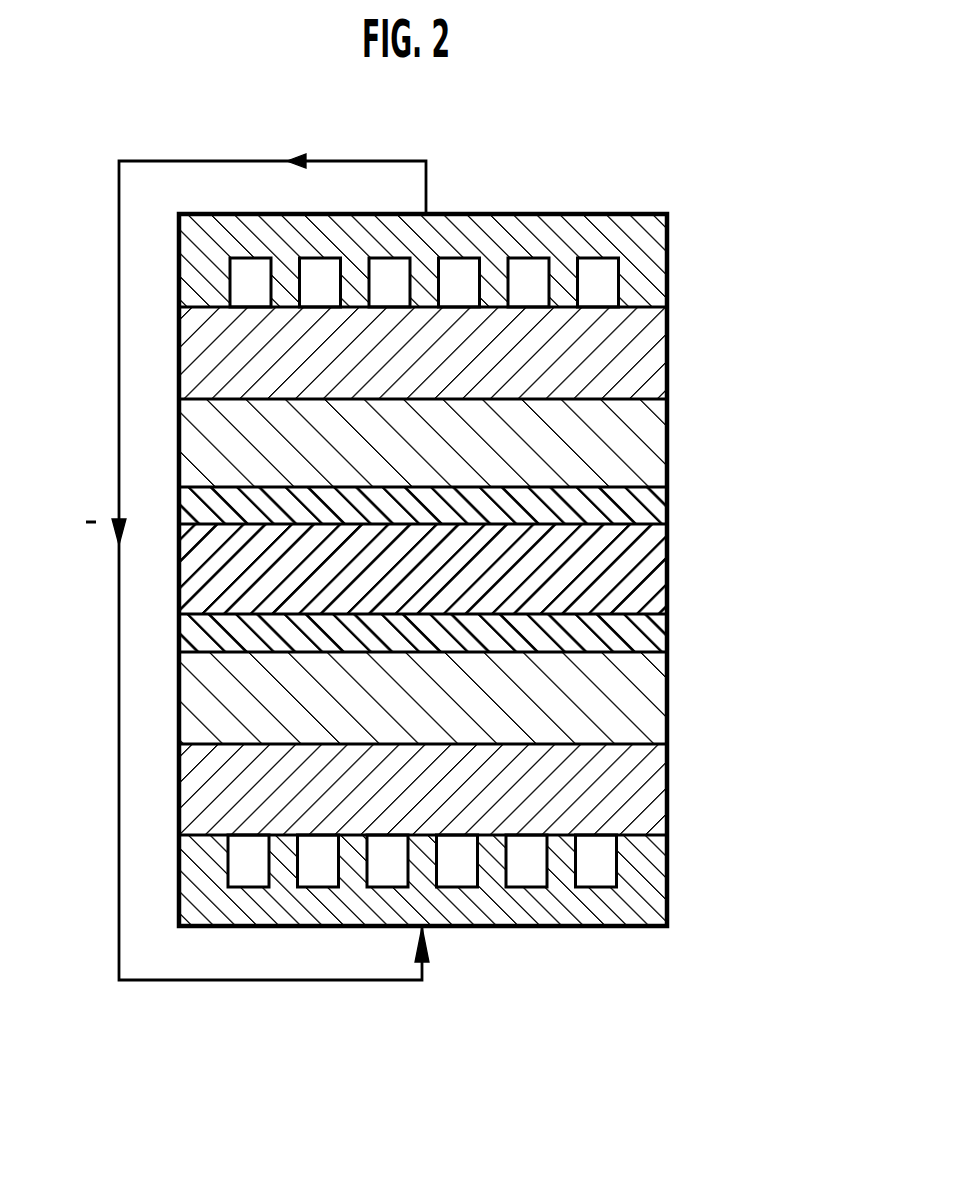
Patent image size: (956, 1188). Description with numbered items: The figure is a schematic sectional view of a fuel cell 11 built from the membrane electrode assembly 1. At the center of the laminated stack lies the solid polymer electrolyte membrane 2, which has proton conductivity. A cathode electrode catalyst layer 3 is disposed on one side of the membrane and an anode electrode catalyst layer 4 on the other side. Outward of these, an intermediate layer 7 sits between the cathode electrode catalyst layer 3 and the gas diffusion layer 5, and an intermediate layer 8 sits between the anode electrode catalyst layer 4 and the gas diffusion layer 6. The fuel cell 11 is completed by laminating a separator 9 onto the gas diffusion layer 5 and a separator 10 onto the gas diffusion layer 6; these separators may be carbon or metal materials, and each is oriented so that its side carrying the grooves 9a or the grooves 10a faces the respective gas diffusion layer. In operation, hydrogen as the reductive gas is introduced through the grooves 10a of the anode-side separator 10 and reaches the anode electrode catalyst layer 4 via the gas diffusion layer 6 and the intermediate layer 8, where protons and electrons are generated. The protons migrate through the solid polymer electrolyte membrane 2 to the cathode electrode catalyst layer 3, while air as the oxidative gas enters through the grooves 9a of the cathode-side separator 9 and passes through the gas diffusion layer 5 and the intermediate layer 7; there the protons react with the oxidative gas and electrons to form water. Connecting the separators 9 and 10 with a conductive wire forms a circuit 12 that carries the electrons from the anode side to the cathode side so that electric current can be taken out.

The membrane electrode assembly 1 is at (755, 540).
The solid polymer electrolyte membrane 2 is at (668, 570).
The cathode electrode catalyst layer 3 is at (668, 633).
The anode electrode catalyst layer 4 is at (668, 503).
The gas diffusion layer 5 is at (668, 790).
The gas diffusion layer 6 is at (668, 355).
The intermediate layer 7 is at (668, 694).
The intermediate layer 8 is at (668, 442).
The separator 9 is at (461, 923).
The grooves 9a is at (578, 850).
The separator 10 is at (469, 218).
The grooves 10a is at (583, 275).
The fuel cell 11 is at (715, 180).
The circuit 12 is at (118, 436).